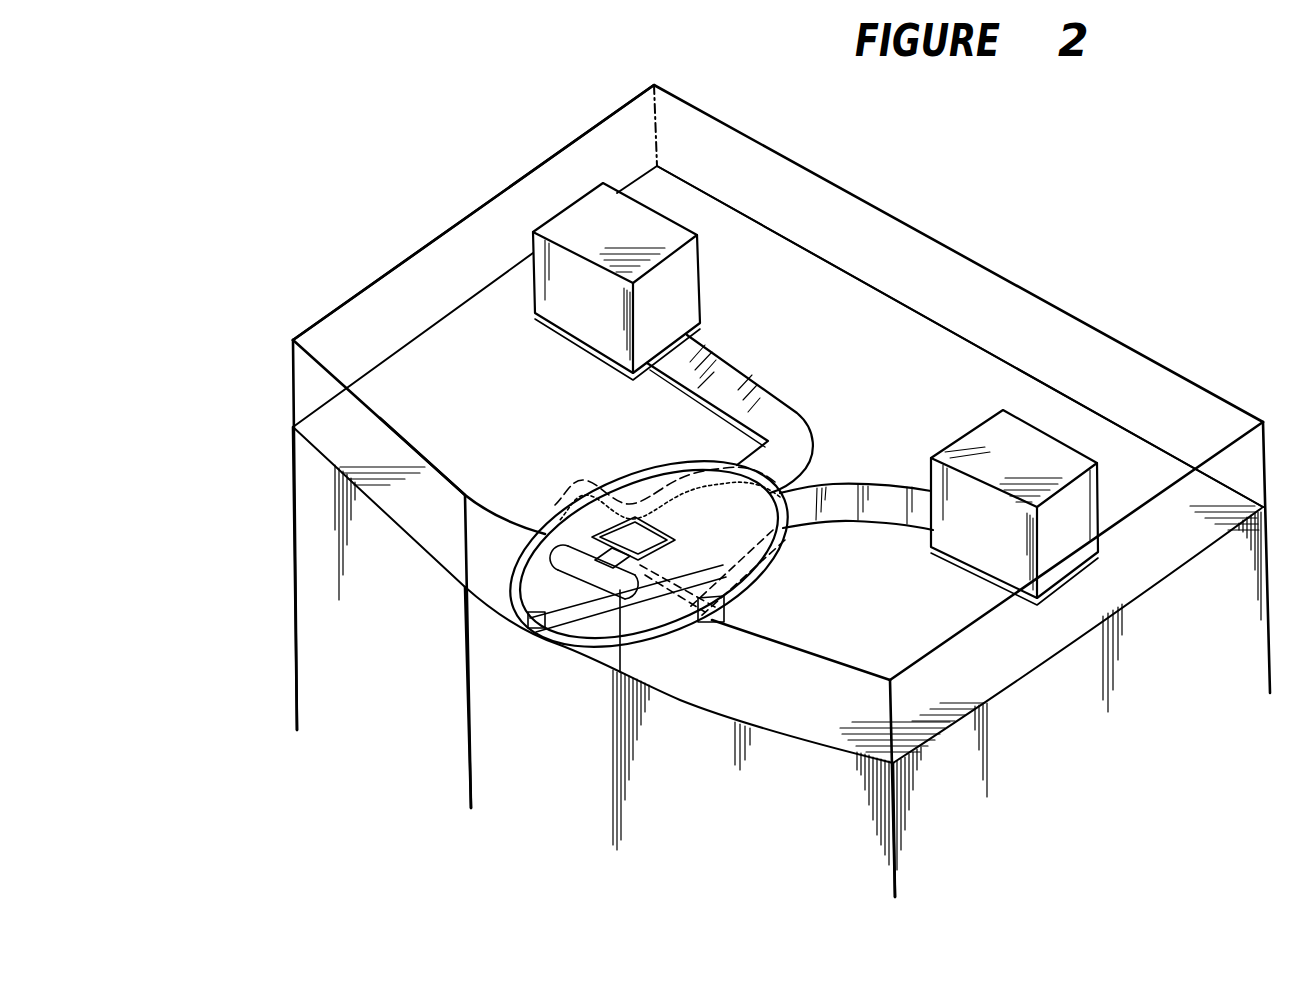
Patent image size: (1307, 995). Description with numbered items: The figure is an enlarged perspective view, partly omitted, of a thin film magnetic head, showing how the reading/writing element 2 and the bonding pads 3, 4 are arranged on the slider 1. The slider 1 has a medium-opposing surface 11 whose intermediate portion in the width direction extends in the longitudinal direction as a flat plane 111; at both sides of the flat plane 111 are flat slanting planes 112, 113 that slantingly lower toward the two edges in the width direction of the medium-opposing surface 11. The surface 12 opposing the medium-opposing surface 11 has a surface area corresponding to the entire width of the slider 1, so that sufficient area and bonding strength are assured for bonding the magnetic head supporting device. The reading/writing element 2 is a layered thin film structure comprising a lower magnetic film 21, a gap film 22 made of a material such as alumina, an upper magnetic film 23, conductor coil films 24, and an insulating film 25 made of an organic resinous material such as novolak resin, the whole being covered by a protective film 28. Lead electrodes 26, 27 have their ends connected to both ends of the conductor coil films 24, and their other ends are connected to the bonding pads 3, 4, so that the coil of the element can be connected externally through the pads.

The slider 1 is at (297, 577).
The medium-opposing surface 11 is at (447, 742).
The flat plane 111 is at (505, 780).
The flat slanting plane 112 is at (357, 672).
The flat slanting plane 113 is at (863, 862).
The surface opposing the medium-opposing surface 12 is at (1000, 358).
The protective film 28 is at (372, 280).
The reading/writing element 2 is at (653, 468).
The lower magnetic film 21 is at (588, 666).
The gap film 22 is at (550, 627).
The upper magnetic film 23 is at (548, 545).
The conductor coil films 24 is at (700, 620).
The insulating film 25 is at (730, 606).
The lead electrode 26 is at (873, 503).
The lead electrode 27 is at (746, 400).
The bonding pad 3 is at (1038, 458).
The bonding pad 4 is at (583, 227).